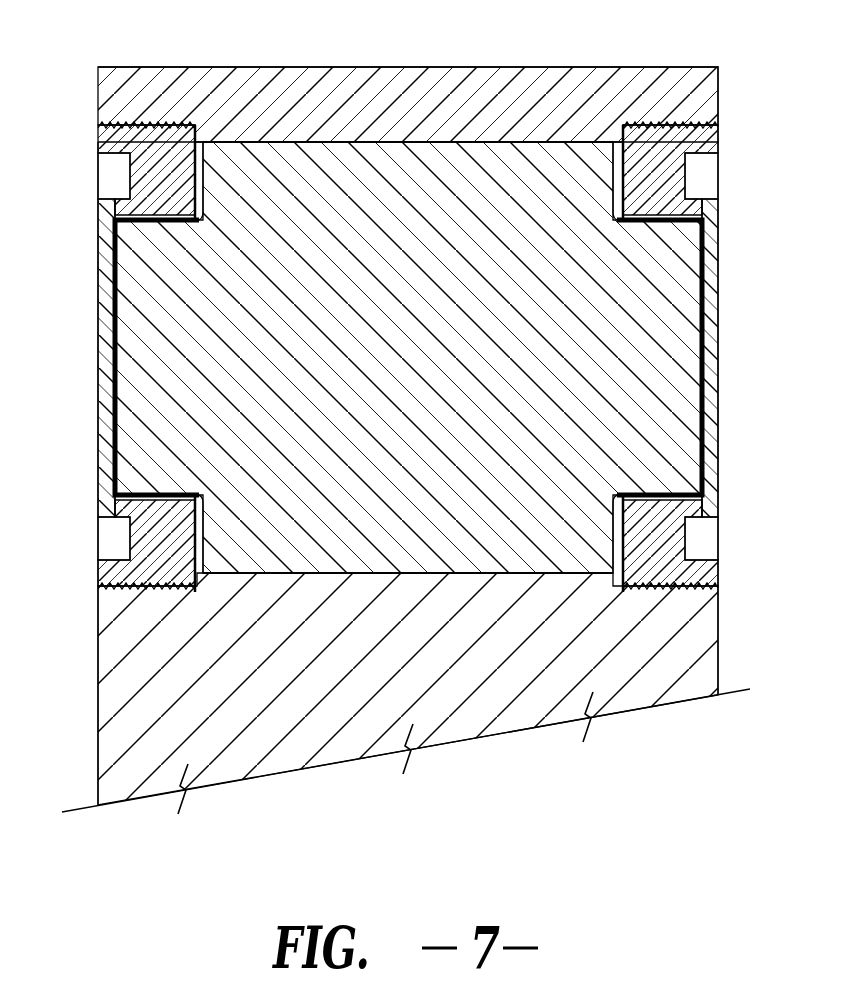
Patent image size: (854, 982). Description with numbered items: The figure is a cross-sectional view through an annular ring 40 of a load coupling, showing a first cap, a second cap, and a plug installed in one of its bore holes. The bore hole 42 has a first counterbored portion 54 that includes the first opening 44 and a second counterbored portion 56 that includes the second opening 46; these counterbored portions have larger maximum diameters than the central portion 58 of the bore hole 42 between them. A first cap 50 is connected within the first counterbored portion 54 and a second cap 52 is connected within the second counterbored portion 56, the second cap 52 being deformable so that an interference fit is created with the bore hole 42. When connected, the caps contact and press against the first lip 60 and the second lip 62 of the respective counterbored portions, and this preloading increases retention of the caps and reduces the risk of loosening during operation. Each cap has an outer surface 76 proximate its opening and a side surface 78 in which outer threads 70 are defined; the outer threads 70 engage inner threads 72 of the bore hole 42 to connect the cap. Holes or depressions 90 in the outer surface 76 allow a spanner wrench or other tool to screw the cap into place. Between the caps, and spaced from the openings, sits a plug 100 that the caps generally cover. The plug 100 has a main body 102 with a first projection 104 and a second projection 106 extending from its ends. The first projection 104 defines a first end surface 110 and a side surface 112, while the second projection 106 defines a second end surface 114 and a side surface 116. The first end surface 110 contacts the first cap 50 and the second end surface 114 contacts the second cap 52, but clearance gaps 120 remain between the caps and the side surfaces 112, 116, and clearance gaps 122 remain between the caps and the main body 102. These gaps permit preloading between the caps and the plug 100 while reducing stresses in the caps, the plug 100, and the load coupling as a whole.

The annular ring 40 is at (328, 98).
The bore hole 42 is at (470, 147).
The first opening 44 is at (108, 116).
The second opening 46 is at (700, 114).
The first cap 50 is at (97, 290).
The second cap 52 is at (719, 290).
The first counterbored portion 54 is at (182, 115).
The second counterbored portion 56 is at (634, 115).
The central portion 58 is at (382, 138).
The first lip 60 is at (188, 143).
The second lip 62 is at (628, 138).
The outer threads 70 is at (144, 597).
The inner threads 72 is at (127, 586).
The outer surface 76 is at (98, 350).
The side surface 78 is at (123, 594).
The holes or depressions 90 is at (107, 537).
The plug 100 is at (500, 537).
The main body 102 is at (367, 580).
The first projection 104 is at (133, 378).
The second projection 106 is at (682, 387).
The first end surface 110 is at (98, 316).
The side surface 112 is at (137, 487).
The second end surface 114 is at (719, 320).
The side surface 116 is at (670, 487).
The clearance gaps 120 is at (131, 230).
The clearance gaps 122 is at (205, 163).